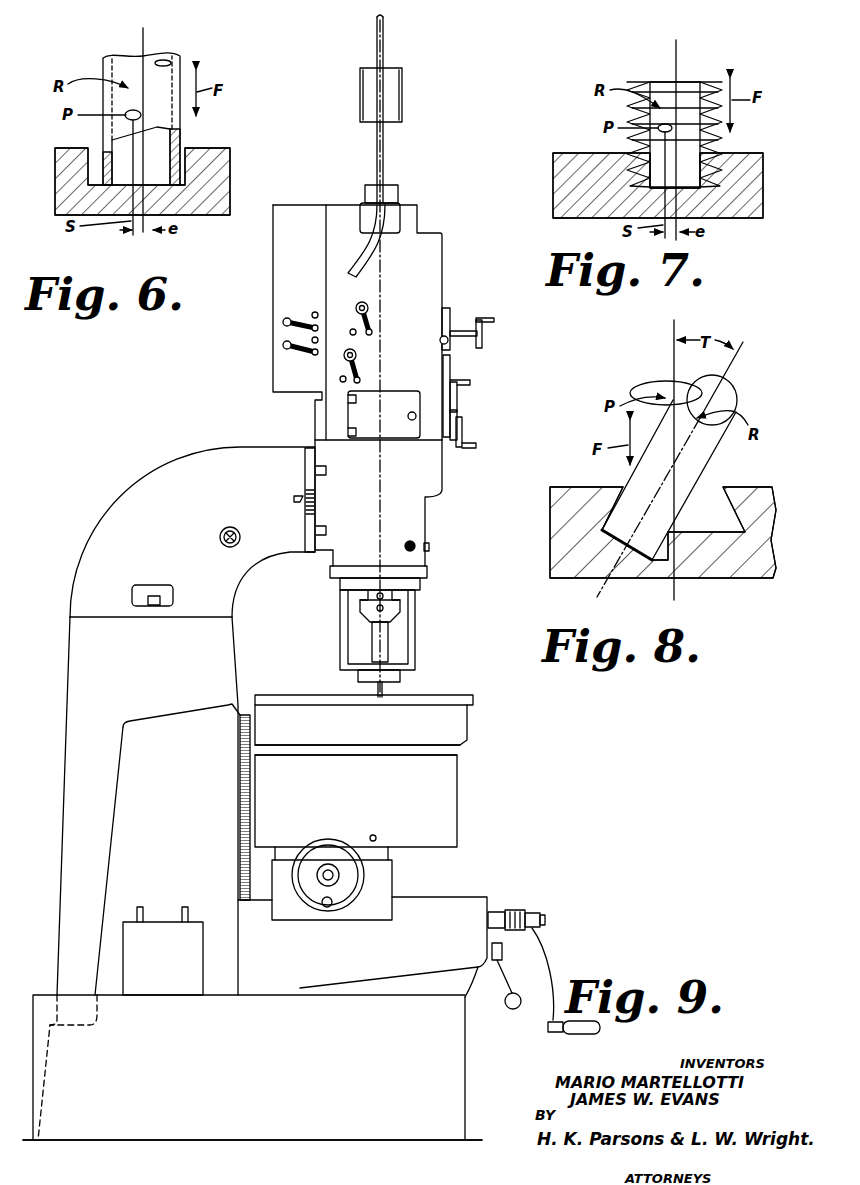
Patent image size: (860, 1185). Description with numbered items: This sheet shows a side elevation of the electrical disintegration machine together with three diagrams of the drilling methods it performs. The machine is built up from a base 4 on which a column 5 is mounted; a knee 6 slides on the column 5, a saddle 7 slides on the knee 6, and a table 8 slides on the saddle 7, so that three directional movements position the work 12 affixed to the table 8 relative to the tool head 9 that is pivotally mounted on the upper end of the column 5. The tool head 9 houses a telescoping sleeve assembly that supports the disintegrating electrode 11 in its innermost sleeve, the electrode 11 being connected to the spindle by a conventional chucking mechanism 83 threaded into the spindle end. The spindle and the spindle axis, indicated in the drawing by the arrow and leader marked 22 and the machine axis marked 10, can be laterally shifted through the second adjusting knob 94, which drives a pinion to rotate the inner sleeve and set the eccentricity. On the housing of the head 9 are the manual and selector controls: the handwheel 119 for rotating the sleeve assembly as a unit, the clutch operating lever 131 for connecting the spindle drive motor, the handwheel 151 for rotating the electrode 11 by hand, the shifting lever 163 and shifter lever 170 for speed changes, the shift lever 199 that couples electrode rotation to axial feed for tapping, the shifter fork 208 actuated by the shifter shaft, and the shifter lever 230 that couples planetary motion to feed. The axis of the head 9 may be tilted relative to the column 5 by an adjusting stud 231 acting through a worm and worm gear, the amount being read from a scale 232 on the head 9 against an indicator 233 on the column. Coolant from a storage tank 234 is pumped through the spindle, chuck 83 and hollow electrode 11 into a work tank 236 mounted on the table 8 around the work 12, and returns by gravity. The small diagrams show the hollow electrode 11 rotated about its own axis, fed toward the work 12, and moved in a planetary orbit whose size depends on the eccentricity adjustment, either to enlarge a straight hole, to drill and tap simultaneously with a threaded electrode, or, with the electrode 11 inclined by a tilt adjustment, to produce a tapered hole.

In FIG. 9, the base 4 is at (470, 1065).
In FIG. 9, the column 5 is at (67, 827).
In FIG. 9, the knee 6 is at (483, 893).
In FIG. 9, the saddle 7 is at (394, 890).
In FIG. 9, the table 8 is at (457, 828).
In FIG. 9, the tool head 9 is at (445, 250).
In FIG. 9, the spindle axis 10 is at (348, 167).
In FIG. 6, the electrode 11 is at (180, 72).
In FIG. 7, the electrode 11 is at (683, 82).
In FIG. 8, the electrode 11 is at (737, 398).
In FIG. 9, the electrode 11 is at (384, 690).
In FIG. 6, the work 12 is at (228, 160).
In FIG. 7, the work 12 is at (560, 155).
In FIG. 8, the work 12 is at (556, 505).
In FIG. 9, the spindle 22 is at (345, 525).
In FIG. 9, the chucking mechanism 83 is at (376, 608).
In FIG. 9, the second adjusting knob 94 is at (376, 596).
In FIG. 9, the handwheel 119 is at (462, 438).
In FIG. 9, the clutch operating lever 131 is at (368, 316).
In FIG. 9, the handwheel 151 is at (480, 320).
In FIG. 9, the shifting lever 163 is at (286, 344).
In FIG. 9, the shifter lever 170 is at (293, 320).
In FIG. 9, the shift lever 199 is at (351, 372).
In FIG. 9, the shifter fork 208 is at (450, 348).
In FIG. 9, the shifter lever 230 is at (458, 395).
In FIG. 9, the adjusting stud 231 is at (222, 528).
In FIG. 9, the scale 232 is at (306, 520).
In FIG. 9, the indicator 233 is at (298, 496).
In FIG. 9, the coolant storage tank 234 is at (193, 1133).
In FIG. 9, the work tank 236 is at (463, 740).